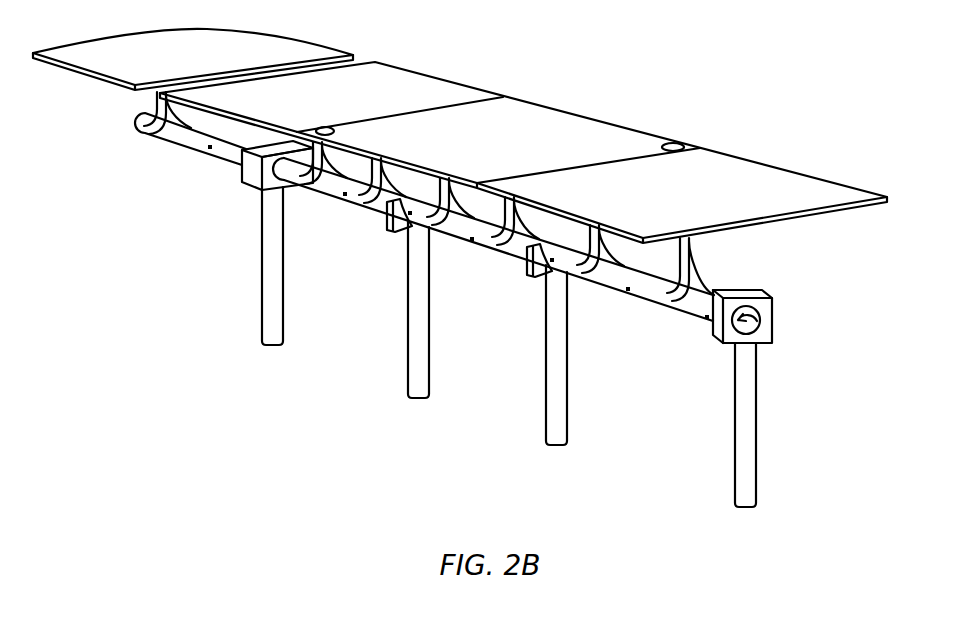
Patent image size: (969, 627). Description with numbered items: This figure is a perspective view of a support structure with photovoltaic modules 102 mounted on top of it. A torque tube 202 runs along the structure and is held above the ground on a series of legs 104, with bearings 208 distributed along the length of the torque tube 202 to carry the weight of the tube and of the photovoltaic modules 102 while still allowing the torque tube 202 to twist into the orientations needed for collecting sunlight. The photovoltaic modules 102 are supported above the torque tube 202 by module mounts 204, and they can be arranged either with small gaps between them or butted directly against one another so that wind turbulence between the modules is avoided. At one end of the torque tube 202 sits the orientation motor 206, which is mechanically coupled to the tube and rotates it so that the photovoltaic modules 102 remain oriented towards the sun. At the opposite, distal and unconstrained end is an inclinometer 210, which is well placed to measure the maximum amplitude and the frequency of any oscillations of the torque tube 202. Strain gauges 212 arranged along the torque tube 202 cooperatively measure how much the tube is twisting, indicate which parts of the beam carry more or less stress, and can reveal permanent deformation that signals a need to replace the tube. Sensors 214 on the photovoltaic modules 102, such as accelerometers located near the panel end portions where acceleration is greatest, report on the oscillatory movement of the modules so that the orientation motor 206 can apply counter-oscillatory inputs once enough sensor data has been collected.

The photovoltaic module 102 is at (460, 136).
The leg 104 is at (509, 347).
The torque tube 202 is at (424, 217).
The module mount 204 is at (451, 196).
The orientation motor 206 is at (261, 194).
The bearing 208 is at (454, 268).
The inclinometer 210 is at (788, 316).
The strain gauge 212 is at (435, 239).
The sensor 214 is at (510, 123).